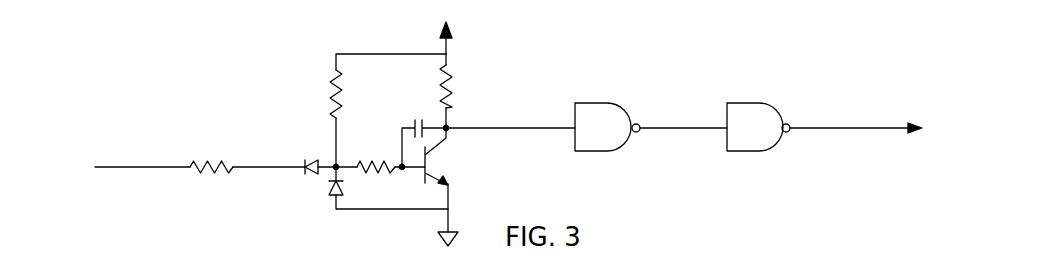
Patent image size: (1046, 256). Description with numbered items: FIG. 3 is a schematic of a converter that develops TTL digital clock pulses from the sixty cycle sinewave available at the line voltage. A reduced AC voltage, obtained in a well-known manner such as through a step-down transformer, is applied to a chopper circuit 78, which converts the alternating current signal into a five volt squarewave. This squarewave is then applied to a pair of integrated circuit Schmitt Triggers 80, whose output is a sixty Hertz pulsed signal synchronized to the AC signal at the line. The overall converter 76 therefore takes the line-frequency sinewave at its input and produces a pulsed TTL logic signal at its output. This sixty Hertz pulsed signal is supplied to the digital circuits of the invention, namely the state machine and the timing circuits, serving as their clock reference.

The zero crossing detector circuit 76 is at (508, 127).
The chopper circuit 78 is at (335, 125).
The 74LS14 Schmitt trigger inverters 80 is at (742, 103).